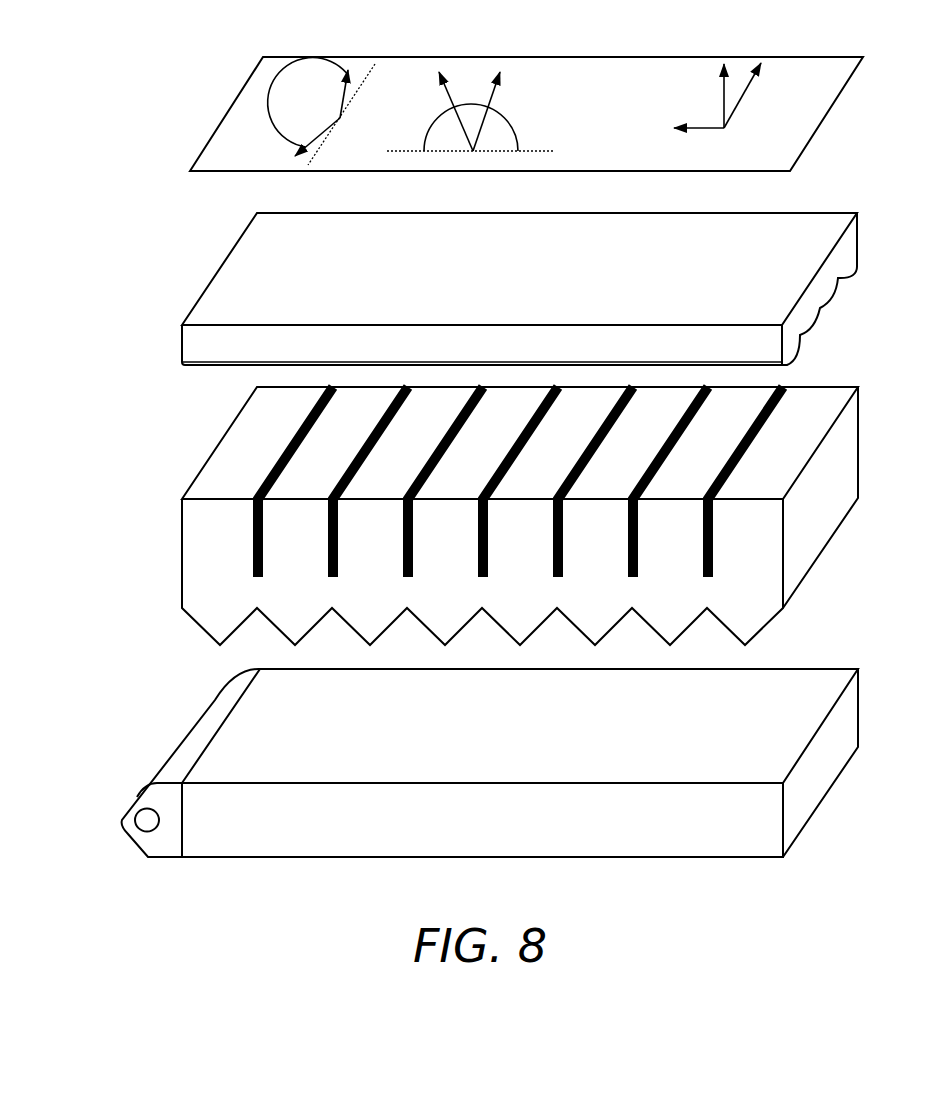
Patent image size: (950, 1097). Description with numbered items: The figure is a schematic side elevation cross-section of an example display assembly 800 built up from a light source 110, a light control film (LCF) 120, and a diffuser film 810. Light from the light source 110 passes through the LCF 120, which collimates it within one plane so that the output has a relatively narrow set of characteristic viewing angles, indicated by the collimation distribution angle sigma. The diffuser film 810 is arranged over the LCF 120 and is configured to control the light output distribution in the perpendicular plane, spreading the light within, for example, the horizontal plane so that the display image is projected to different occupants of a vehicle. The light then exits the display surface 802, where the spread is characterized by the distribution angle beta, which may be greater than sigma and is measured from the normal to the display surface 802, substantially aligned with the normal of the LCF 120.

The display assembly 800 is at (130, 77).
The display surface 802 is at (640, 122).
The diffuser film 810 is at (153, 304).
The LCF 120 is at (133, 532).
The light source 110 is at (135, 743).